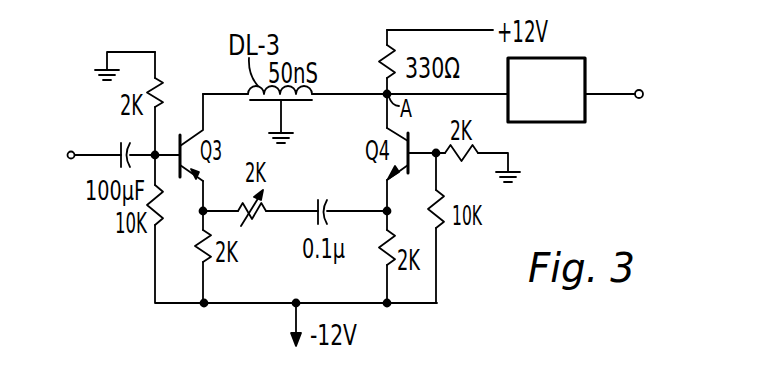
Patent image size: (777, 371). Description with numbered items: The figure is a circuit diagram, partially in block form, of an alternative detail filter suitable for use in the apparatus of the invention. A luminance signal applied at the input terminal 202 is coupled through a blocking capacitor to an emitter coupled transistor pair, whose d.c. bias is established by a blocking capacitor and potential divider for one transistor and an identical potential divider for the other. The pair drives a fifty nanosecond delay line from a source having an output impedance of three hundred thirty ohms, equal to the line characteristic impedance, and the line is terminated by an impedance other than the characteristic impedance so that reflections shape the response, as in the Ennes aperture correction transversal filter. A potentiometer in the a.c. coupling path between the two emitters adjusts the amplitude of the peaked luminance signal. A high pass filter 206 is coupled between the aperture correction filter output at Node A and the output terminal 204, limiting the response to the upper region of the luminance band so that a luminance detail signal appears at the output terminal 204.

The input terminal 202 is at (70, 151).
The output terminal 204 is at (639, 89).
The high pass filter 206 is at (576, 58).